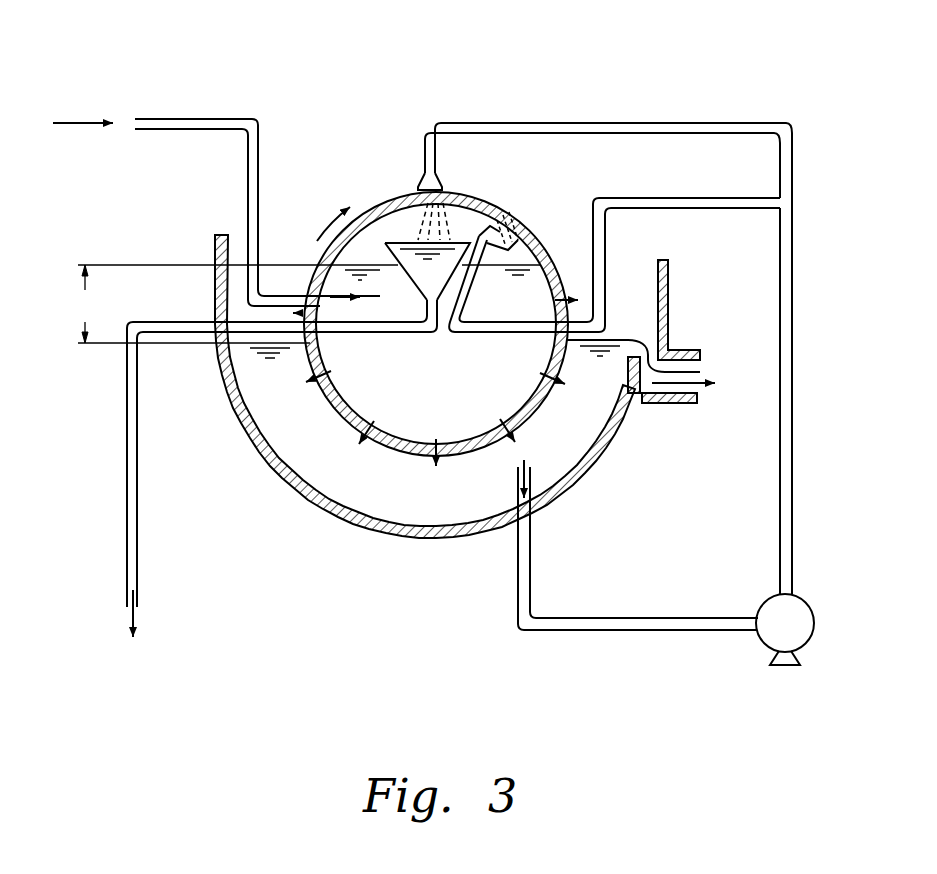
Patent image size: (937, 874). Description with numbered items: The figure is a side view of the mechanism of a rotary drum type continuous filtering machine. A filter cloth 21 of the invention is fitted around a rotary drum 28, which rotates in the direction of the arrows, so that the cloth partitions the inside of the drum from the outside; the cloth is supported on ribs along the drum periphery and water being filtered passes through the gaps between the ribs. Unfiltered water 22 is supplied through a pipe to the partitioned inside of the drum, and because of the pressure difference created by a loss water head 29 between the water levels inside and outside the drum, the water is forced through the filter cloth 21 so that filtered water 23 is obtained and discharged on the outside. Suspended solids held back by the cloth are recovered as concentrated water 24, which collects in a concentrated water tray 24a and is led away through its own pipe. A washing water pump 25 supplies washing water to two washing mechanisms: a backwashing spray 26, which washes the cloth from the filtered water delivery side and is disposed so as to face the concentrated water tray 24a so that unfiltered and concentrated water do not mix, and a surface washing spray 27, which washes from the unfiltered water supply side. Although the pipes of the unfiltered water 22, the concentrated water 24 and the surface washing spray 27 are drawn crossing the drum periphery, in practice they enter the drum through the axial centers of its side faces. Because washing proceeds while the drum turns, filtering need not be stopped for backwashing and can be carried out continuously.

The filter cloth 21 is at (333, 407).
The unfiltered water 22 is at (150, 126).
The filtered water 23 is at (643, 397).
The concentrated water 24 is at (130, 570).
The concentrated water tray 24a is at (380, 208).
The washing water pump 25 is at (800, 604).
The backwashing spray 26 is at (420, 184).
The surface washing spray 27 is at (490, 237).
The rotary drum 28 is at (400, 452).
The loss water head 29 is at (88, 304).